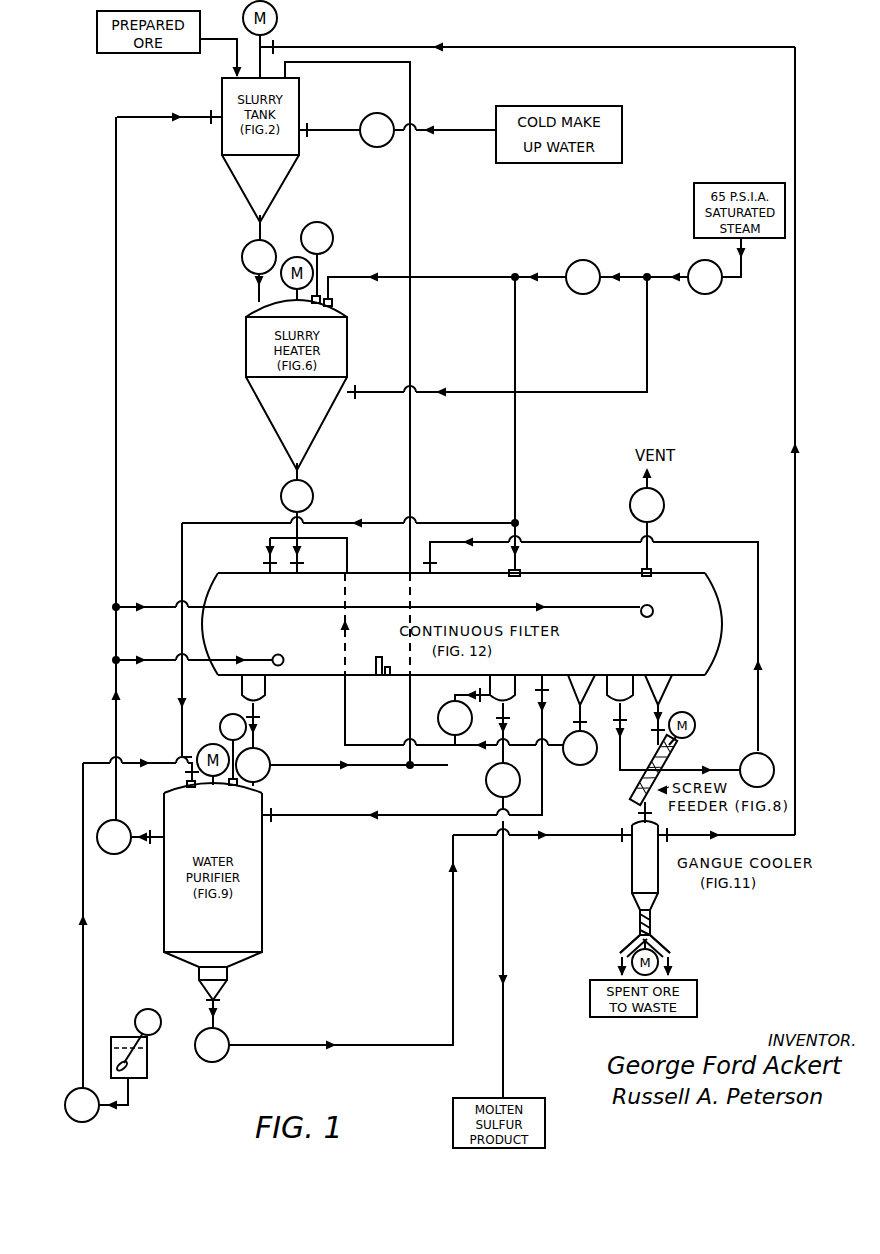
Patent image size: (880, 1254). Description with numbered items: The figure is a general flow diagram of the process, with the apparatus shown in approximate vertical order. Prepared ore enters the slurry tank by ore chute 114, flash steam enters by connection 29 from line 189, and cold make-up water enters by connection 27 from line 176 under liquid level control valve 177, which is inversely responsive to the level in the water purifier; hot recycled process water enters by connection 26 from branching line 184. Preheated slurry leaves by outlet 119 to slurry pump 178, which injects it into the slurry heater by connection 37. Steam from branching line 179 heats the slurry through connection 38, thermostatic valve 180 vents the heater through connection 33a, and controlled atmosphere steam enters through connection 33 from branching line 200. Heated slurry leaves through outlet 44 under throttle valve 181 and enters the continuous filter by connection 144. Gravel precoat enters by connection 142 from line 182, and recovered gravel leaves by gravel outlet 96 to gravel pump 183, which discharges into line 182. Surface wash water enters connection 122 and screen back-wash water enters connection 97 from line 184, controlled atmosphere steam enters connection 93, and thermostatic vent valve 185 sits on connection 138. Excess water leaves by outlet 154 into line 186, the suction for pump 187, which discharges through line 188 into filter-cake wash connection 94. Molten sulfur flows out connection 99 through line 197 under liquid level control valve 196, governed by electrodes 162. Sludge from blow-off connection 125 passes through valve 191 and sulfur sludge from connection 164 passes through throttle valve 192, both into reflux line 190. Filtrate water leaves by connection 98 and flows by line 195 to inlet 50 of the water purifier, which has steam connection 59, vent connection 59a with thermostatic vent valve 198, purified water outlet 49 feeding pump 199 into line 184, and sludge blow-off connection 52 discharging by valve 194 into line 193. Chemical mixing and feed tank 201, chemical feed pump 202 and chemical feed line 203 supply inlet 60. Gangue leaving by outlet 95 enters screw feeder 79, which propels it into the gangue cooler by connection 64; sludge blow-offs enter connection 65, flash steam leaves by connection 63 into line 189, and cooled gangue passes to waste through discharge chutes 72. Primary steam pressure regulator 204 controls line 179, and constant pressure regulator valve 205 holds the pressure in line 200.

The flash steam inlet connection 29 is at (280, 44).
The ore chute 114 is at (232, 56).
The hot recycled process water inlet 26 is at (209, 112).
The cold make-up water inlet 27 is at (313, 119).
The liquid level control valve 177 is at (372, 113).
The cold make-up water line 176 is at (455, 121).
The slurry outlet connection 119 is at (270, 222).
The slurry pump 178 is at (243, 256).
The thermostatic valve 180 is at (332, 240).
The slurry heater inlet connection 37 is at (252, 295).
The vent connection 33a is at (322, 294).
The controlled atmosphere steam connection 33 is at (334, 303).
The branching line 200 is at (463, 266).
The constant pressure regulator valve 205 is at (580, 260).
The branching steam line 179 is at (615, 265).
The primary steam pressure regulator 204 is at (700, 296).
The steam connection 38 is at (360, 383).
The branching line 184 is at (120, 393).
The heated slurry outlet 44 is at (306, 470).
The throttle valve 181 is at (314, 497).
The branching line 190 is at (412, 460).
The filter medium inlet connection 142 is at (265, 562).
The slurry inlet connection 144 is at (303, 562).
The filter-cake wash connection 94 is at (440, 551).
The controlled atmosphere steam connection 93 is at (522, 571).
The vent connection 138 is at (652, 571).
The thermostatic vent valve 185 is at (671, 492).
The flash steam line 189 is at (804, 572).
The screen back-wash water connection 97 is at (644, 606).
The surface wash water connection 122 is at (283, 656).
The electrodes 162 is at (380, 655).
The sulfur sludge outlet connection 164 is at (464, 697).
The gravel line 182 is at (346, 718).
The thermostatic vent valve 198 is at (227, 716).
The sludge blow-off connection 125 is at (260, 717).
The sludge valve 191 is at (266, 750).
The throttle valve 192 is at (440, 736).
The molten sulfur outlet connection 99 is at (508, 718).
The filtrate water outlet connection 98 is at (544, 695).
The gravel outlet connection 96 is at (573, 723).
The excess water outlet 154 is at (617, 720).
The gangue outlet 95 is at (654, 733).
The pump discharge line 188 is at (752, 710).
The pump 187 is at (762, 753).
The suction line 186 is at (643, 766).
The gravel pump 183 is at (590, 762).
The screw feeder 79 is at (640, 787).
The gangue cooler inlet connection 64 is at (652, 813).
The flash steam outlet connection 63 is at (670, 831).
The sludge blow-off inlet connection 65 is at (621, 836).
The chemical inlet 60 is at (183, 755).
The controlled atmosphere steam connection 59 is at (170, 783).
The vent valve connection 59a is at (236, 786).
The inlet connection 50 is at (278, 807).
The purified water outlet 49 is at (155, 830).
The pump 199 is at (121, 853).
The filtrate water line 195 is at (427, 810).
The liquid level control valve 196 is at (486, 781).
The molten sulfur product line 197 is at (505, 928).
The discharge chutes 72 is at (619, 947).
The sludge blow-off connection 52 is at (225, 1000).
The valve 194 is at (224, 1057).
The sludge line 193 is at (382, 1034).
The chemical feed line 203 is at (85, 987).
The chemical mixing and feed tank 201 is at (149, 1066).
The chemical feed pump 202 is at (94, 1118).